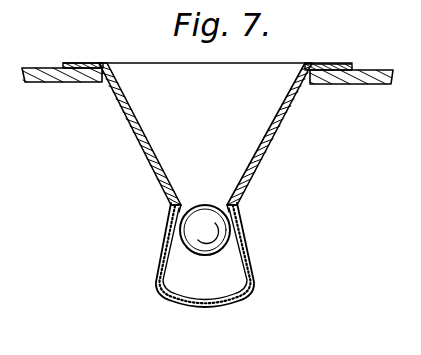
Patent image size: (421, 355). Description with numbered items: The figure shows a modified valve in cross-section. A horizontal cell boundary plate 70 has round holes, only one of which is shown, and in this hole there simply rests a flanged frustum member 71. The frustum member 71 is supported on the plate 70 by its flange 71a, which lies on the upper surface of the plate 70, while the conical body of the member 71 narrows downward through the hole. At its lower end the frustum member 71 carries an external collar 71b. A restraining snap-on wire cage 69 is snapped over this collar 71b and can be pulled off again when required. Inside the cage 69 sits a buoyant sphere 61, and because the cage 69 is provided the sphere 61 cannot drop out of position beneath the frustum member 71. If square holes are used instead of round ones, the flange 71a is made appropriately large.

The mounting plate 70 is at (47, 83).
The funnel 71 is at (142, 139).
The funnel rim flange 71a is at (93, 54).
The funnel neck 71b is at (221, 188).
The cup 69 is at (255, 260).
The ball 61 is at (196, 224).